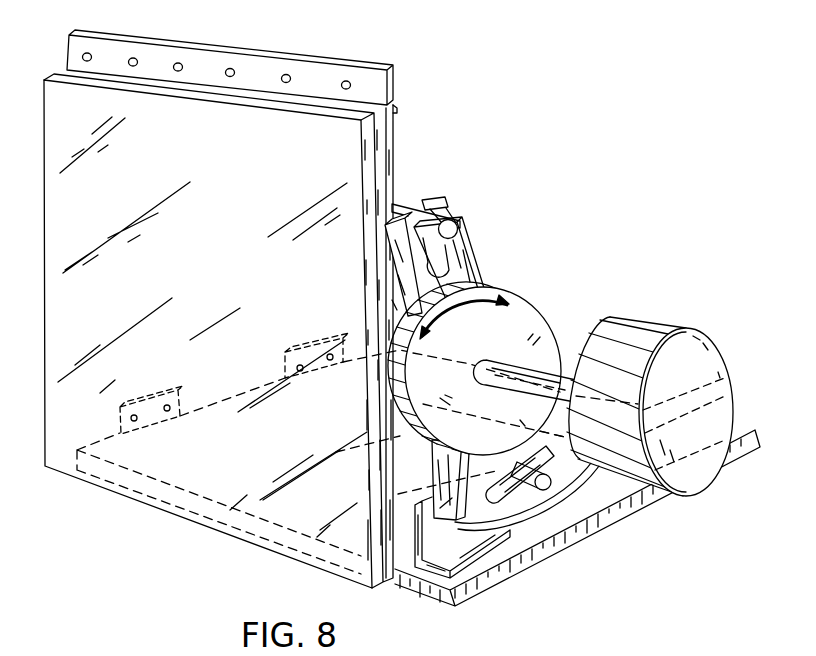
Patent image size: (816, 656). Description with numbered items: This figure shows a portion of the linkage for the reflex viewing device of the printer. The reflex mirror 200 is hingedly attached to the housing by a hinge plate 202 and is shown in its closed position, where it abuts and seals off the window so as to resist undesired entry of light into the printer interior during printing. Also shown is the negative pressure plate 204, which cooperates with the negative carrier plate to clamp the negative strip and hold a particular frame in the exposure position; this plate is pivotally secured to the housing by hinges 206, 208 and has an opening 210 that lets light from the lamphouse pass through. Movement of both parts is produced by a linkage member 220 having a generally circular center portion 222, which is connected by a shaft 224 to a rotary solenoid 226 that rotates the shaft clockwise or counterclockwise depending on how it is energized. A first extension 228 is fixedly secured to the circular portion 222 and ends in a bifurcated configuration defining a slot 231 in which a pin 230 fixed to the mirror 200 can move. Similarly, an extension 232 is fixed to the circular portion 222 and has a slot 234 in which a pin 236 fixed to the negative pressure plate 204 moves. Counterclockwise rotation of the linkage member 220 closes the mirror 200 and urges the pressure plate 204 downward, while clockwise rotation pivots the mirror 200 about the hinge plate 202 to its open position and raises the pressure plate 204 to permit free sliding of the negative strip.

The reflex mirror 200 is at (194, 258).
The hinge plate 202 is at (262, 72).
The negative pressure plate 204 is at (657, 502).
The hinge 206 is at (162, 397).
The hinge 208 is at (302, 350).
The opening 210 is at (345, 453).
The linkage member 220 is at (540, 291).
The circular center portion 222 is at (413, 391).
The shaft 224 is at (537, 370).
The rotary solenoid 226 is at (655, 372).
The first extension 228 is at (464, 245).
The pin 230 is at (456, 222).
The slot 231 is at (450, 257).
The extension 232 is at (534, 500).
The slot 234 is at (490, 500).
The pin 236 is at (548, 490).